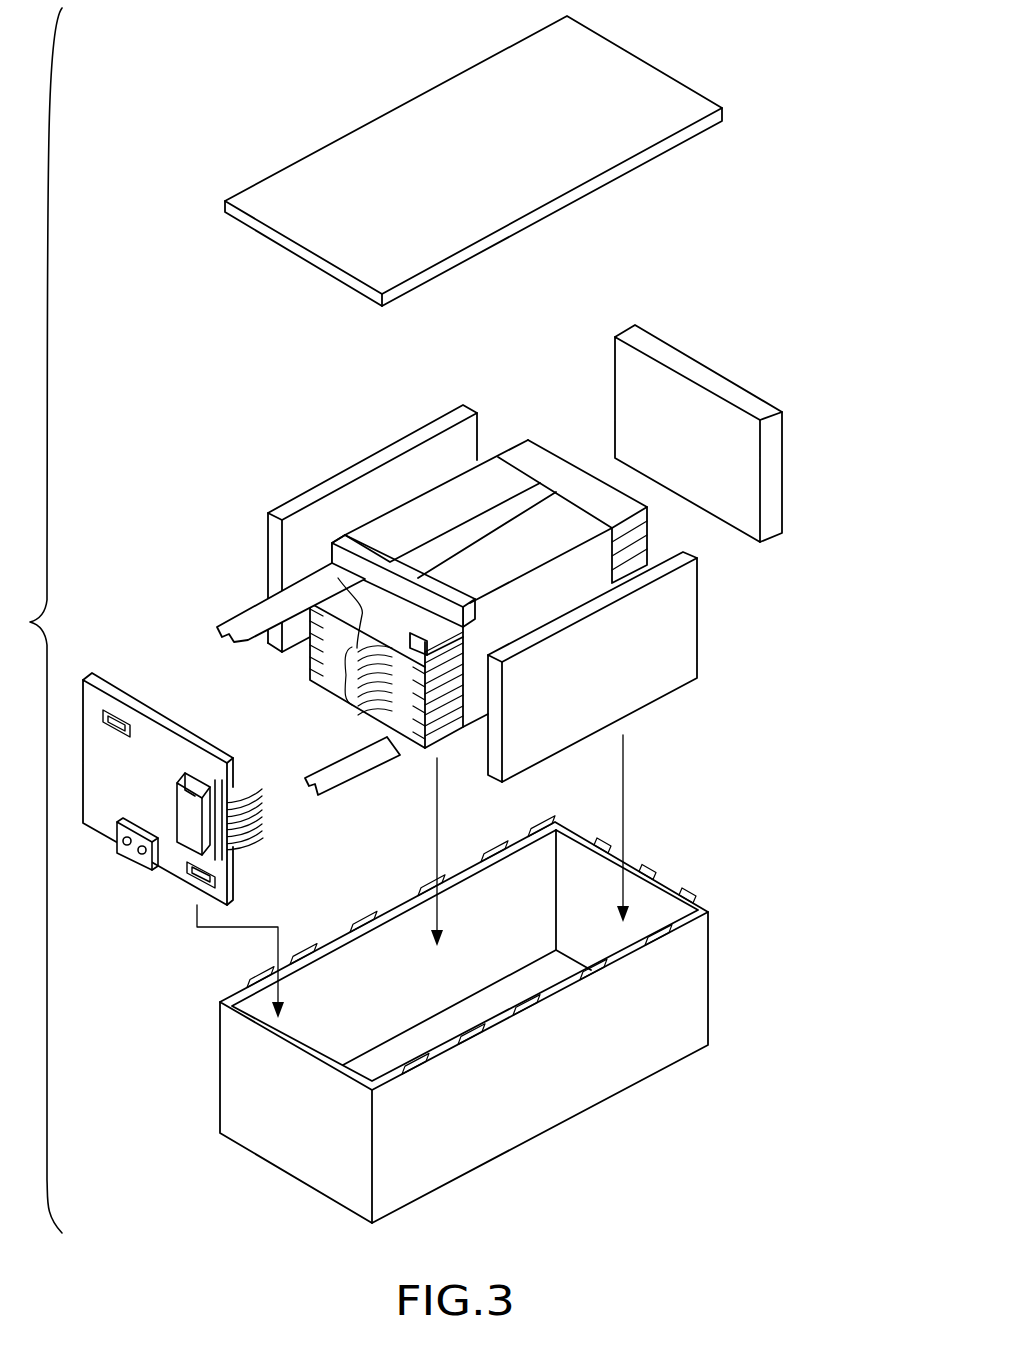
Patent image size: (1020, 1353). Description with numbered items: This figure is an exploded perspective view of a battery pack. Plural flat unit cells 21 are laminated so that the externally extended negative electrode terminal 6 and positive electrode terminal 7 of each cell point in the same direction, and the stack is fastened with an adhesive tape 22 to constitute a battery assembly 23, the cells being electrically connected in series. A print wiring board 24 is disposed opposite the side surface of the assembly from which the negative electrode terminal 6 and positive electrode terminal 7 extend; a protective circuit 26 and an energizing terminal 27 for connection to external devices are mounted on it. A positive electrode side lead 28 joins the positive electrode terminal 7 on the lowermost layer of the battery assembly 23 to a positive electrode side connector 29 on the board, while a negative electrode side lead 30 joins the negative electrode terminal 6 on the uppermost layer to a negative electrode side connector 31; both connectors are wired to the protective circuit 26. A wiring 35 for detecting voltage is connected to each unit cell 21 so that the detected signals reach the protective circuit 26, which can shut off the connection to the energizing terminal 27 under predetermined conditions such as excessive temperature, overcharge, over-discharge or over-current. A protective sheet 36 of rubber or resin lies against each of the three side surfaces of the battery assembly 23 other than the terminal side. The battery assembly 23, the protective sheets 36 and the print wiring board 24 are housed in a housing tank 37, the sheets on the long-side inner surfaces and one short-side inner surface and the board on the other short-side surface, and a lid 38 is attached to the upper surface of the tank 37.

The negative electrode terminal 6 is at (318, 574).
The positive electrode terminal 7 is at (398, 628).
The unit cell 21 is at (643, 526).
The adhesive tape 22 is at (555, 527).
The battery assembly 23 is at (417, 494).
The print wiring board 24 is at (117, 676).
The protective circuit 26 is at (192, 774).
The energizing terminal 27 is at (142, 861).
The positive electrode side lead 28 is at (350, 790).
The positive electrode side connector 29 is at (218, 878).
The negative electrode side lead 30 is at (230, 620).
The negative electrode side connector 31 is at (124, 718).
The wiring for detecting voltage 35 is at (343, 678).
The protective sheet 36 is at (337, 480).
The housing tank 37 is at (700, 985).
The lid 38 is at (665, 93).